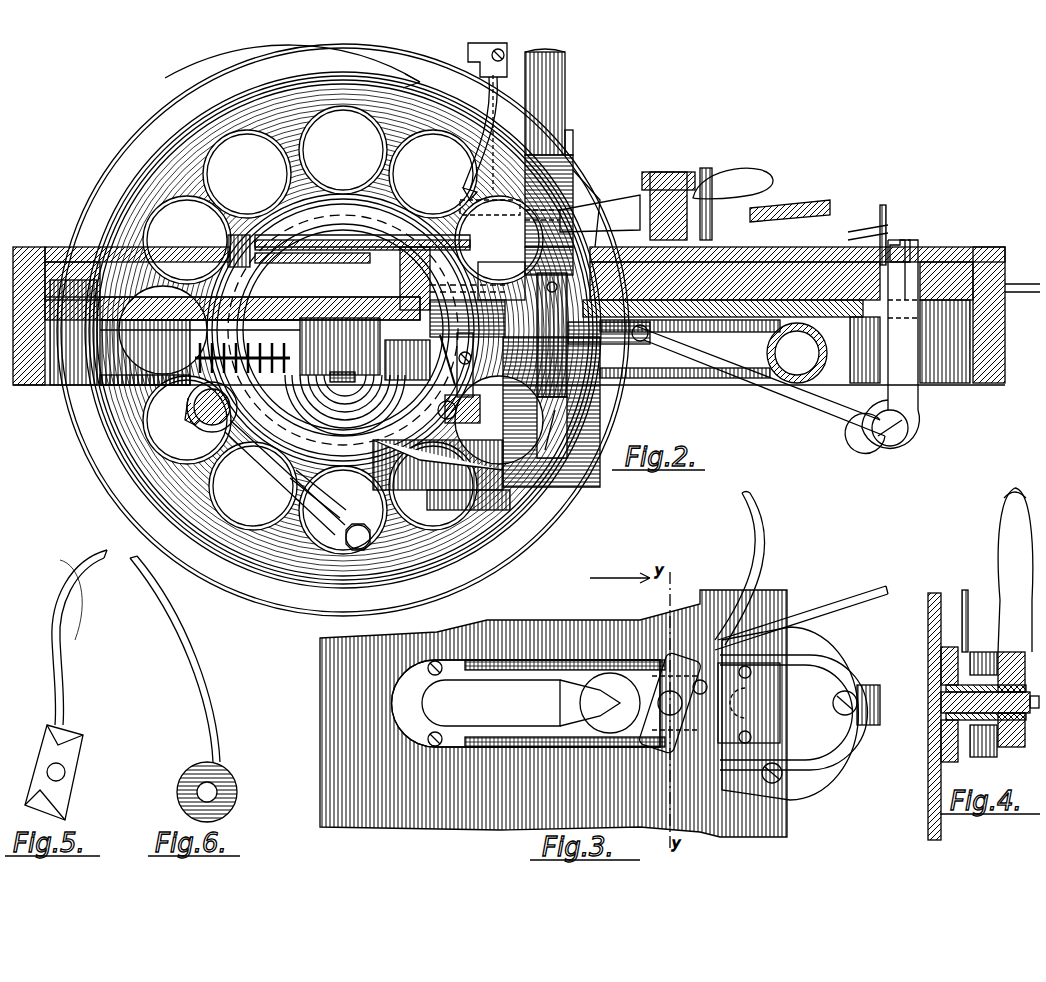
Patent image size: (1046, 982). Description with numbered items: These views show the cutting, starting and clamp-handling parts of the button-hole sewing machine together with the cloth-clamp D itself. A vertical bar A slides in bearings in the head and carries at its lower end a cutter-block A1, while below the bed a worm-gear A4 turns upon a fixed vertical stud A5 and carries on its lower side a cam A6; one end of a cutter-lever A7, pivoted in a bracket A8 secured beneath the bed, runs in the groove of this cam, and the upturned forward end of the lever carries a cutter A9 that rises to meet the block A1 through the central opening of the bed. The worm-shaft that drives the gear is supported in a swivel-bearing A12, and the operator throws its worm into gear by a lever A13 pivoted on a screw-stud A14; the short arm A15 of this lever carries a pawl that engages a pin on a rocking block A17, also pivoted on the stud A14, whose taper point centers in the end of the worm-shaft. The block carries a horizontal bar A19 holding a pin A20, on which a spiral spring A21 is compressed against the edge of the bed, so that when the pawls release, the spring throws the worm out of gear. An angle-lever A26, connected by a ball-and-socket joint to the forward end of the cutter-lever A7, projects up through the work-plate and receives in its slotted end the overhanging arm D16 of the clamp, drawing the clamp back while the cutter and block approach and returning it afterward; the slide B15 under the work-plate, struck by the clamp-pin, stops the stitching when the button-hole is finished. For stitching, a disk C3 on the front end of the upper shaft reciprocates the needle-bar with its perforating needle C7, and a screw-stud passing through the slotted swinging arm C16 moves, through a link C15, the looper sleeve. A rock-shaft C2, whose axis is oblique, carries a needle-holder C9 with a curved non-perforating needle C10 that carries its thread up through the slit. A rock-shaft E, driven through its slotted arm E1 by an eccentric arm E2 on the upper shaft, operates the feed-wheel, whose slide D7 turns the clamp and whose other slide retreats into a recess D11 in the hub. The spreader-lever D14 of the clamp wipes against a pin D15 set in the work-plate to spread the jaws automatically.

In FIG. 2, the vertical bar A is at (551, 102).
In FIG. 2, the cutter-block A1 is at (562, 188).
In FIG. 2, the worm-gear A4 is at (407, 360).
In FIG. 2, the fixed vertical stud A5 is at (480, 510).
In FIG. 2, the cam A6 is at (400, 478).
In FIG. 2, the cutter-lever A7 is at (552, 335).
In FIG. 2, the bracket A8 is at (551, 412).
In FIG. 2, the cutter A9 is at (549, 263).
In FIG. 2, the swivel-bearing A12 is at (467, 311).
In FIG. 2, the lever A13 is at (1022, 280).
In FIG. 2, the screw-stud A14 is at (345, 385).
In FIG. 2, the short arm A15 is at (260, 308).
In FIG. 2, the rocking block A17 is at (340, 346).
In FIG. 2, the horizontal bar A19 is at (285, 348).
In FIG. 2, the pin A20 is at (195, 350).
In FIG. 2, the spiral spring A21 is at (195, 372).
In FIG. 2, the angle-lever A26 is at (775, 346).
In FIG. 2, the slide B15 is at (955, 262).
In FIG. 2, the rock-shaft C2 is at (797, 353).
In FIG. 2, the disk C3 is at (655, 341).
In FIG. 2, the perforating needle C7 is at (478, 155).
In FIG. 2, the needle-holder C9 is at (459, 378).
In FIG. 2, the non-perforating needle C10 is at (501, 291).
In FIG. 2, the link C15 is at (495, 137).
In FIG. 2, the slotted swinging arm C16 is at (481, 60).
In FIG. 2, the clamp D is at (255, 240).
In FIG. 3, the clamp D is at (553, 713).
In FIG. 4, the clamp D is at (928, 794).
In FIG. 2, the slide D7 is at (60, 250).
In FIG. 2, the recess D11 is at (723, 308).
In FIG. 2, the spreader-lever D14 is at (862, 195).
In FIG. 3, the spreader-lever D14 is at (850, 606).
In FIG. 4, the spreader-lever D14 is at (997, 570).
In FIG. 6, the spreader-lever D14 is at (195, 680).
In FIG. 2, the pin D15 is at (892, 224).
In FIG. 2, the overhanging arm D16 is at (886, 233).
In FIG. 2, the rock-shaft E is at (211, 407).
In FIG. 2, the slotted arm E1 is at (275, 488).
In FIG. 2, the eccentric arm E2 is at (374, 537).